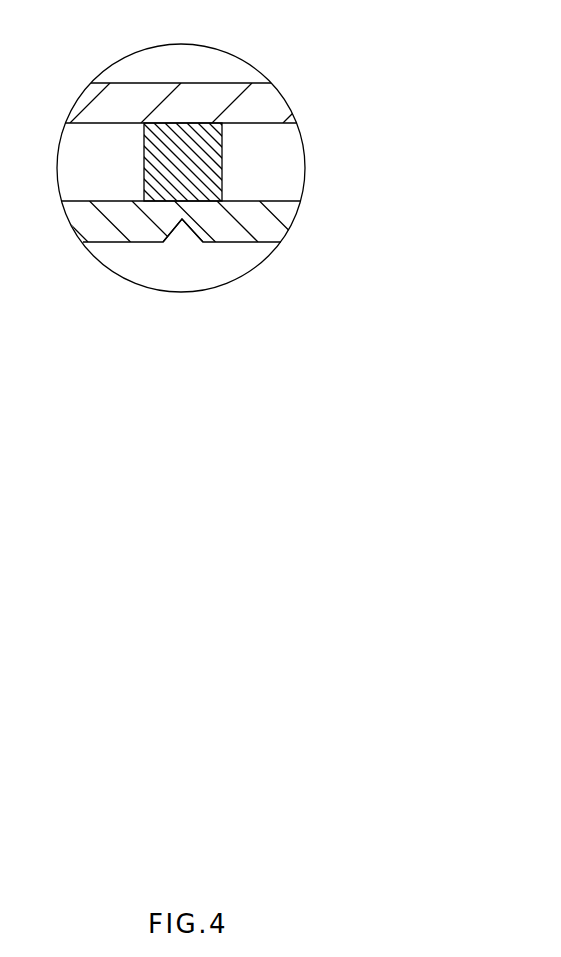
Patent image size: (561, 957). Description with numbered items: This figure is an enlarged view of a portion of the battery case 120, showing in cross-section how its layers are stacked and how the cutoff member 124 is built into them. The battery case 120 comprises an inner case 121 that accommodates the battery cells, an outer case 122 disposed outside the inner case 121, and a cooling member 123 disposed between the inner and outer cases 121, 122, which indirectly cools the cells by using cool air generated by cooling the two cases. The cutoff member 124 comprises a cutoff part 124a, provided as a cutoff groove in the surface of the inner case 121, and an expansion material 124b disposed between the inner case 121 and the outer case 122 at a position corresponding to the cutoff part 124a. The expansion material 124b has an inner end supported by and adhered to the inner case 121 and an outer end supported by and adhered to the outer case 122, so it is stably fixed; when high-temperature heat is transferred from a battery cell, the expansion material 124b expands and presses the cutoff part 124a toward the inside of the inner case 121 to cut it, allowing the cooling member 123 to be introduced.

The battery case 120 is at (217, 162).
The inner case 121 is at (186, 221).
The outer case 122 is at (273, 101).
The cooling member 123 is at (285, 157).
The cutoff member 124 is at (182, 265).
The cutoff part 124a is at (192, 232).
The expansion material 124b is at (162, 180).